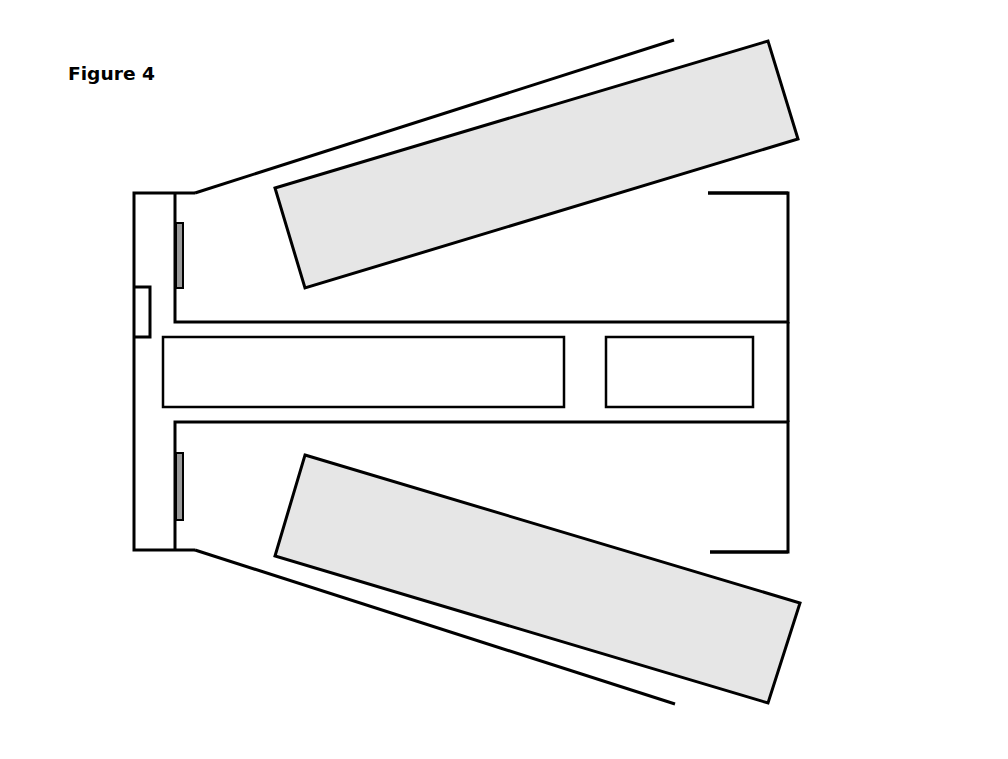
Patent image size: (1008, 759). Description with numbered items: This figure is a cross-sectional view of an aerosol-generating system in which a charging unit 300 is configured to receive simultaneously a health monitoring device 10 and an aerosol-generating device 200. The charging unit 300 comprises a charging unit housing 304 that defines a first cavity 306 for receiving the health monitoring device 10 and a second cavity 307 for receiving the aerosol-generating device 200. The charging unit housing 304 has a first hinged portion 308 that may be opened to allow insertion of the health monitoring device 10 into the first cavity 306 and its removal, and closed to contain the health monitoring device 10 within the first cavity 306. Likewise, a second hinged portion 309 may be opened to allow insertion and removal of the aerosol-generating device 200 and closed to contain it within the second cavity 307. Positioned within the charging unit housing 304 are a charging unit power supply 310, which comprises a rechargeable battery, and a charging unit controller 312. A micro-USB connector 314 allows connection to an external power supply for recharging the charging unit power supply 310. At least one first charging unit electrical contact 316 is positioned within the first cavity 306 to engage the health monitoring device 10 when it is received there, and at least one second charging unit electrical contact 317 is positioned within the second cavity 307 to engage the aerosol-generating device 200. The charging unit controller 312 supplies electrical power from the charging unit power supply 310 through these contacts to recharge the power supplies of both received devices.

The health monitoring device 10 is at (748, 98).
The aerosol-generating device 200 is at (748, 633).
The charging unit 300 is at (135, 447).
The charging unit housing 304 is at (790, 333).
The first cavity 306 is at (770, 243).
The second cavity 307 is at (732, 510).
The first hinged portion 308 is at (377, 132).
The second hinged portion 309 is at (377, 610).
The charging unit power supply 310 is at (200, 377).
The charging unit controller 312 is at (735, 363).
The micro-USB connector 314 is at (138, 312).
The first charging unit electrical contact 316 is at (178, 240).
The second charging unit electrical contact 317 is at (177, 498).